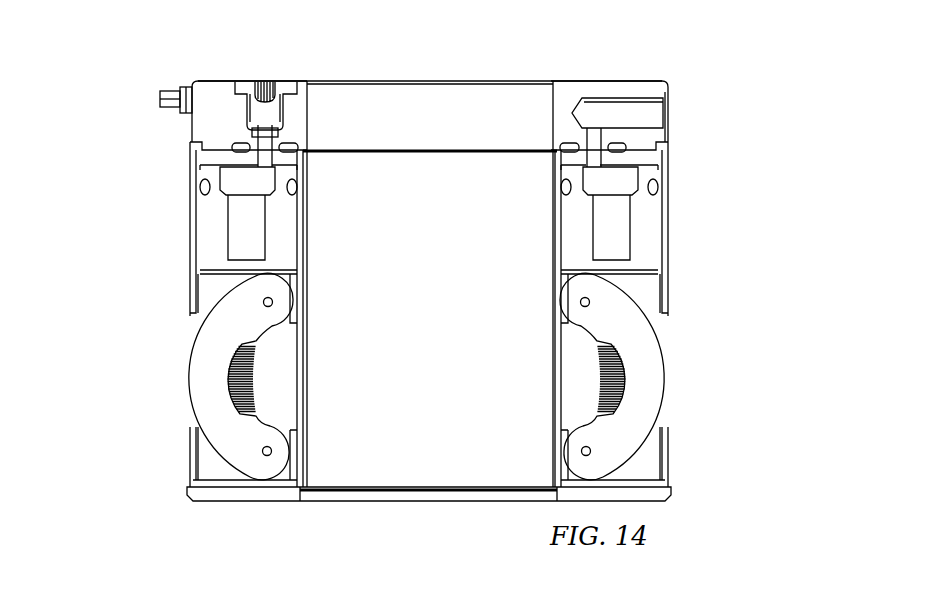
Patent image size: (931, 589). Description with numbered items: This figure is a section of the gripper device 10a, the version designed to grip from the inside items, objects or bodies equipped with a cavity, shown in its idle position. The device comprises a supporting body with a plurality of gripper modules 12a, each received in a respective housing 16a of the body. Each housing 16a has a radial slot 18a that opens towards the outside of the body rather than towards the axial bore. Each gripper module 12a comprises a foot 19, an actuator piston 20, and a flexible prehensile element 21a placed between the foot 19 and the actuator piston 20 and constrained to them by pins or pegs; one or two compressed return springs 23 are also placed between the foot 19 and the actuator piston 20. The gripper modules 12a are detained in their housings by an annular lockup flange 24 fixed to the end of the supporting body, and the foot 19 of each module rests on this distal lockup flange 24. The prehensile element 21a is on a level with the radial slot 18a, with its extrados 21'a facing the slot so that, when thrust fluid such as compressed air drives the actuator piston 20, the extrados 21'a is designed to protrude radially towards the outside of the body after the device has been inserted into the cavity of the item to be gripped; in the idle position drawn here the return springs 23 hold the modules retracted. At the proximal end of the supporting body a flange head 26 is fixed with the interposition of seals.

The gripper device 10a is at (681, 158).
The gripper module 12a is at (153, 328).
The housing 16a is at (277, 372).
The radial slot 18a is at (188, 467).
The foot 19 is at (645, 472).
The actuator piston 20 is at (650, 233).
The prehensile element 21a is at (650, 347).
The extrados 21'a is at (694, 376).
The compressed return spring 23 is at (598, 367).
The annular lockup flange 24 is at (242, 497).
The flange head 26 is at (598, 80).